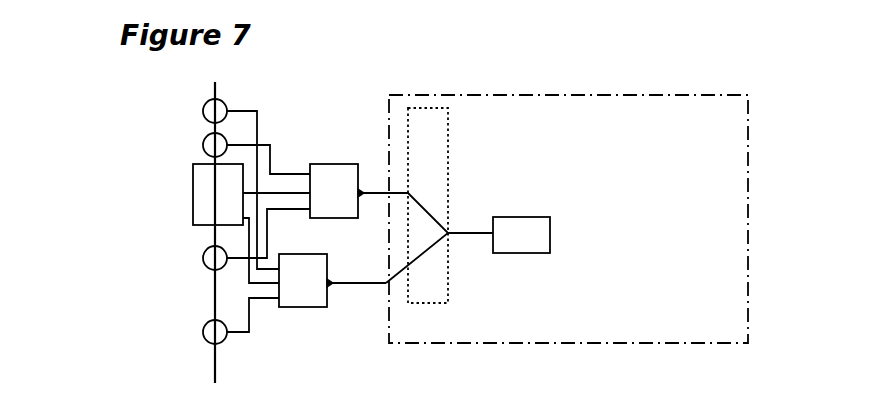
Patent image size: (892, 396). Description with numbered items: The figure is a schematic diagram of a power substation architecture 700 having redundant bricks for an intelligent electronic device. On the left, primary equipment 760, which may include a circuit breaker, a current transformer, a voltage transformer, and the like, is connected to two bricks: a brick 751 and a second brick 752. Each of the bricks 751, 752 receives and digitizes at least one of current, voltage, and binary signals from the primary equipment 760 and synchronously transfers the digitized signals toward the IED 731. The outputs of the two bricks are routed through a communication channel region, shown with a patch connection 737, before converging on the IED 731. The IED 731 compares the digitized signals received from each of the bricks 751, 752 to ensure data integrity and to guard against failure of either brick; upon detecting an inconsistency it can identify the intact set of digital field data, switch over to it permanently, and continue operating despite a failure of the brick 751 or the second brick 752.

The power substation architecture 700 is at (686, 78).
The IED 731 is at (548, 218).
The patch panel connection 737 is at (448, 291).
The brick 751 is at (321, 162).
The second brick 752 is at (296, 307).
The primary equipment 760 is at (188, 115).